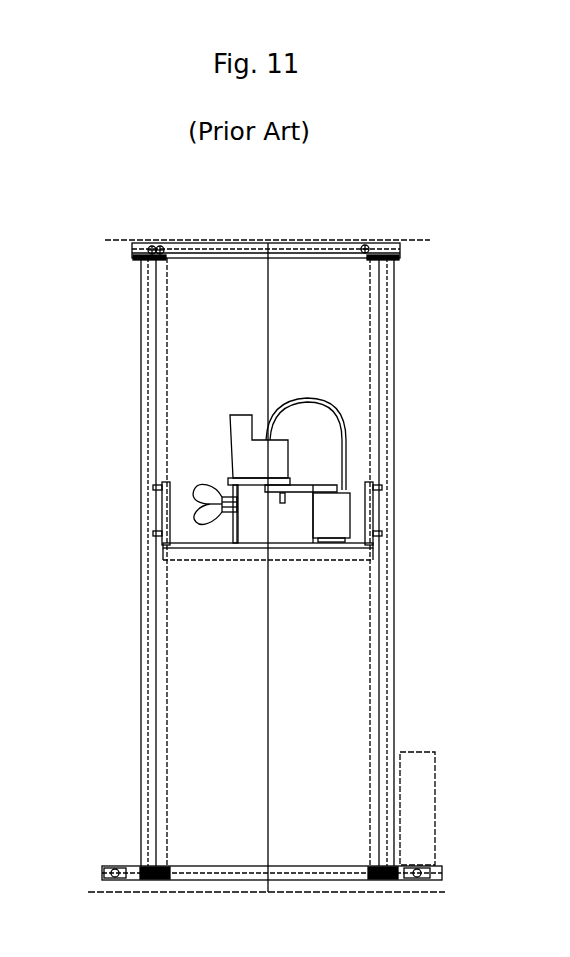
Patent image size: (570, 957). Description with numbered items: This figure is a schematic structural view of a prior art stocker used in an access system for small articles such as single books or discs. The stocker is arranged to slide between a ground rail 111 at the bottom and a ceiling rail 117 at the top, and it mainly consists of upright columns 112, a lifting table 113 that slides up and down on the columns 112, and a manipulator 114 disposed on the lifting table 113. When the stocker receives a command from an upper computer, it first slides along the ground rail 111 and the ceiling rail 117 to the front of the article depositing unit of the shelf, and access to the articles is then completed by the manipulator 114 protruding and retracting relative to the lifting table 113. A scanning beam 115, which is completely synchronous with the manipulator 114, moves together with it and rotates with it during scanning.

The ground rail 111 is at (235, 867).
The columns 112 is at (315, 562).
The lifting table 113 is at (323, 499).
The manipulator 114 is at (134, 543).
The scanning beam 115 is at (198, 533).
The ceiling rail 117 is at (267, 217).